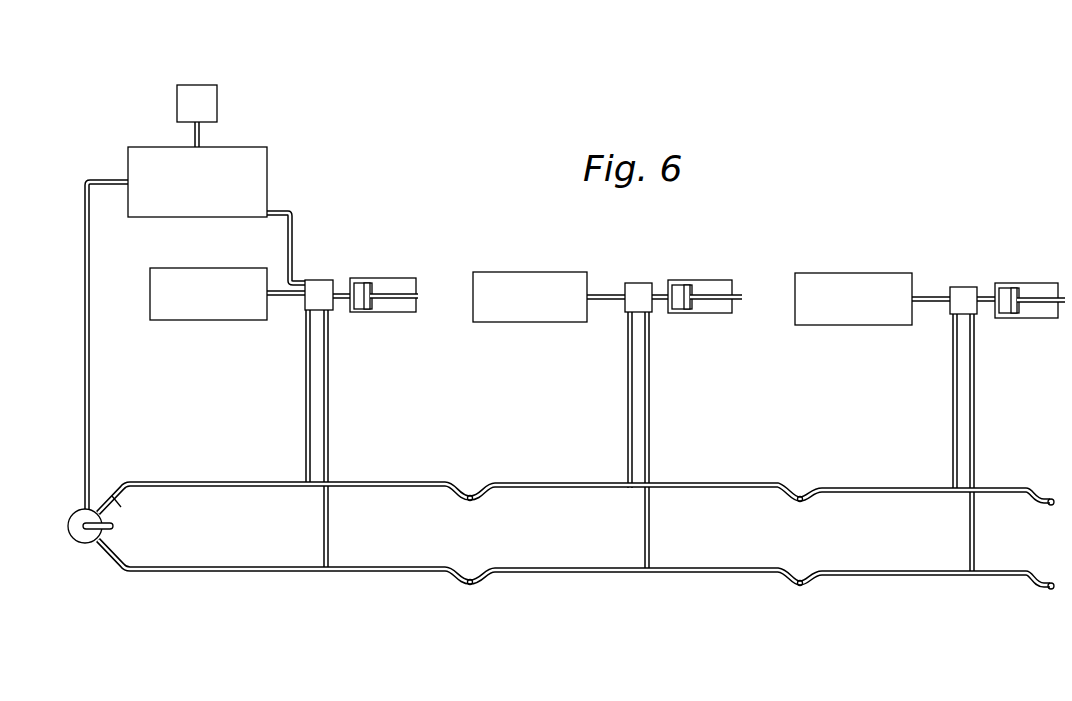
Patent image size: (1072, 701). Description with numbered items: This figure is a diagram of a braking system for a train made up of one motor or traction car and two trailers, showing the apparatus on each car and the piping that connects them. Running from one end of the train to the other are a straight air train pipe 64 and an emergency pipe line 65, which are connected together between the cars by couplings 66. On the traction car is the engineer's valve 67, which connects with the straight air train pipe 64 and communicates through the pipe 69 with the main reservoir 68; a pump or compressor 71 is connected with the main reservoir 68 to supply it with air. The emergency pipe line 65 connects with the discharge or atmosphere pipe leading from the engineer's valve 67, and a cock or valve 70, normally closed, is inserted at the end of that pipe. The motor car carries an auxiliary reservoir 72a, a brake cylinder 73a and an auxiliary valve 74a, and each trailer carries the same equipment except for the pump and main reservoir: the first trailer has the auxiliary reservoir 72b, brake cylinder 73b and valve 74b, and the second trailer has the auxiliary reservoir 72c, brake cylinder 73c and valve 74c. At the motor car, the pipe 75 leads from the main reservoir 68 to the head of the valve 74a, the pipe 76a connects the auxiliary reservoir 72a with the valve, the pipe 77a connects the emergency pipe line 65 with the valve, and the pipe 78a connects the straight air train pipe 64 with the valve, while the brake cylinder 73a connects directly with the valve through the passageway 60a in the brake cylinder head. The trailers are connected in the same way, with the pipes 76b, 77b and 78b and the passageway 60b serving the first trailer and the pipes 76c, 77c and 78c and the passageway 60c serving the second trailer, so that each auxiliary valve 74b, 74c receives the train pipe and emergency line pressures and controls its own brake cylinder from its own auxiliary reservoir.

The passageway 60a is at (345, 299).
The passageway 60b is at (660, 305).
The passageway 60c is at (988, 303).
The straight air train pipe 64 is at (243, 571).
The emergency pipe line 65 is at (365, 483).
The couplings 66 is at (471, 499).
The engineer's valve 67 is at (82, 537).
The main reservoir 68 is at (262, 157).
The pipe 69 is at (91, 365).
The cock or valve 70 is at (126, 500).
The pump or compressor 71 is at (205, 92).
The auxiliary reservoir 72a is at (218, 313).
The auxiliary reservoir 72b is at (520, 280).
The auxiliary reservoir 72c is at (830, 280).
The brake cylinder 73a is at (404, 279).
The brake cylinder 73b is at (712, 280).
The brake cylinder 73c is at (1032, 282).
The auxiliary valve 74a is at (318, 286).
The auxiliary valve 74b is at (640, 288).
The auxiliary valve 74c is at (966, 290).
The pipe 75 is at (295, 225).
The pipe 76a is at (290, 301).
The pipe 76b is at (612, 300).
The pipe 76c is at (935, 305).
The pipe 77a is at (306, 417).
The pipe 77b is at (627, 423).
The pipe 77c is at (953, 423).
The pipe 78a is at (330, 420).
The pipe 78b is at (650, 418).
The pipe 78c is at (976, 432).